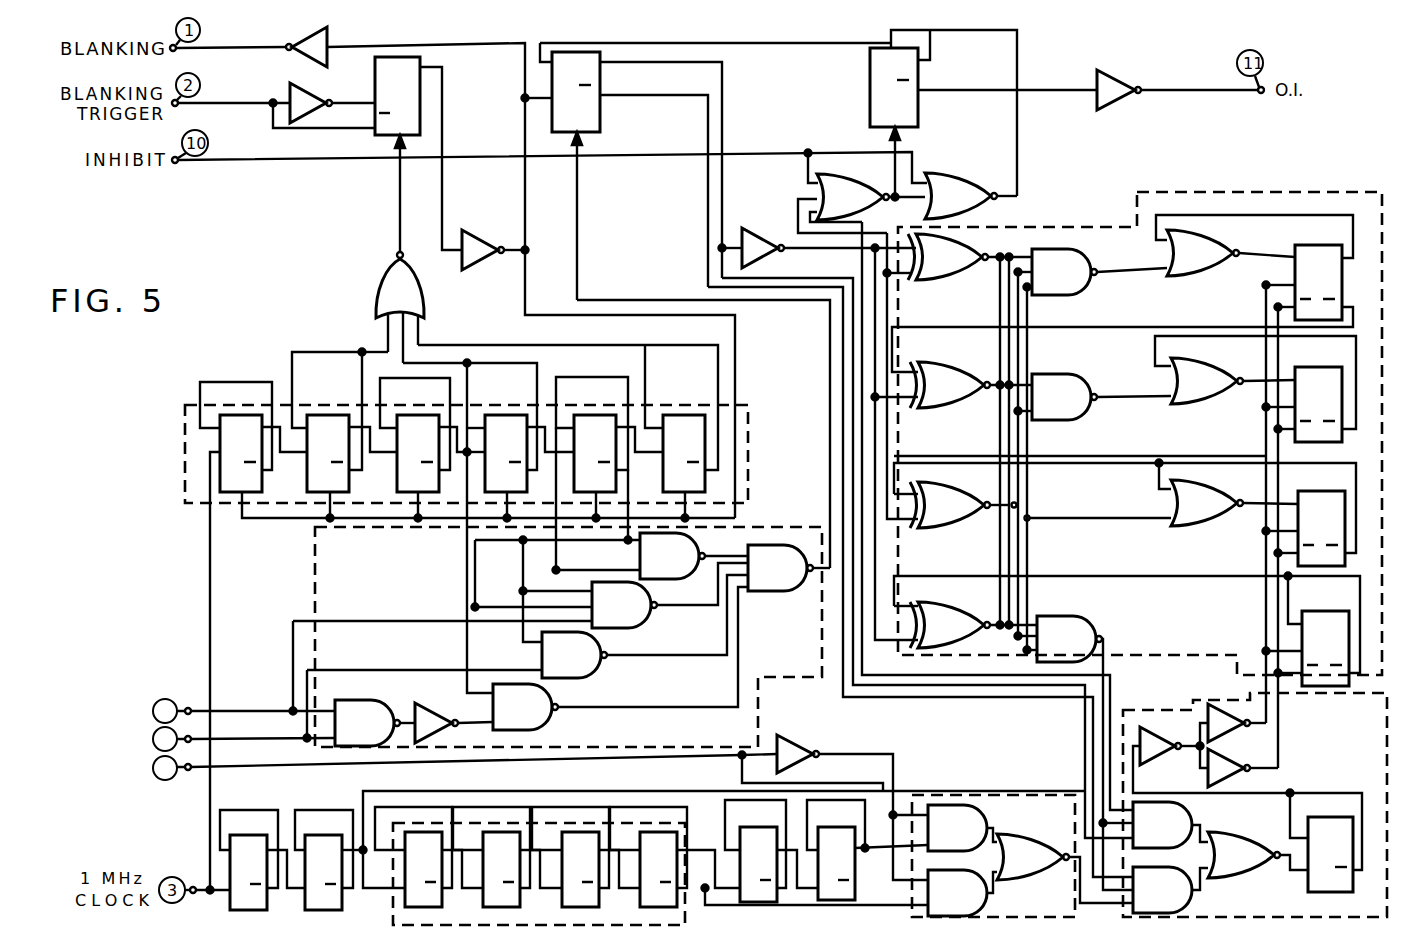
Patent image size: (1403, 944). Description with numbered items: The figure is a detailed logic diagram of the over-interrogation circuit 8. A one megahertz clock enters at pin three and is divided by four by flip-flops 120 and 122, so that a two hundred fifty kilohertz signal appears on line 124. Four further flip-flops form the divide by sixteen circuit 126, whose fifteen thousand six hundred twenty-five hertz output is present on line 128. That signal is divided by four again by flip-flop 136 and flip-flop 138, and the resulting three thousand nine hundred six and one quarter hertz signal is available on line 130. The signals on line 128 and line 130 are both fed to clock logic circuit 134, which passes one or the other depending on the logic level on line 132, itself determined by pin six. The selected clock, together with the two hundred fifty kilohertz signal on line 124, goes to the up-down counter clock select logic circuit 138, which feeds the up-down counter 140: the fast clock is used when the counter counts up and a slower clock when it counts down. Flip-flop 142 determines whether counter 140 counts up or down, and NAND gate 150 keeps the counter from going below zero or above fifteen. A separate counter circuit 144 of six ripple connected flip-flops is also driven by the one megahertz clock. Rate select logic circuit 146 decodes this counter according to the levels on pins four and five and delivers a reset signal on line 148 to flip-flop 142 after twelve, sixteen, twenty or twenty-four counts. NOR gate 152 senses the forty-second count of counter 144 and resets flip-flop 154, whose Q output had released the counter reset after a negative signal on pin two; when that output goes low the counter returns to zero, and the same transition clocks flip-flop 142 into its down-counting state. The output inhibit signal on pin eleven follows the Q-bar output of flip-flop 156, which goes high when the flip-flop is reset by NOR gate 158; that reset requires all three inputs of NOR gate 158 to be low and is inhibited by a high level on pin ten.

The over-interrogation circuit 8 is at (1358, 128).
The flip-flop 120 is at (261, 832).
The flip-flop 122 is at (338, 832).
The line 124 is at (400, 792).
The divide by 16 circuit 126 is at (393, 926).
The line 128 is at (762, 906).
The line 130 is at (942, 828).
The line 132 is at (268, 770).
The clock logic circuit 134 is at (997, 863).
The flip-flop 136 is at (768, 824).
The up-down counter clock select logic circuit 138 is at (846, 824).
The up-down counter 140 is at (1137, 529).
The flip-flop 142 is at (601, 82).
The counter circuit 144 is at (746, 403).
The rate select logic circuit 146 is at (774, 526).
The line 148 is at (830, 450).
The NAND gate 150 is at (1062, 616).
The NOR gate 152 is at (382, 267).
The flip-flop 154 is at (375, 86).
The flip-flop 156 is at (870, 78).
The NOR gate 158 is at (842, 175).